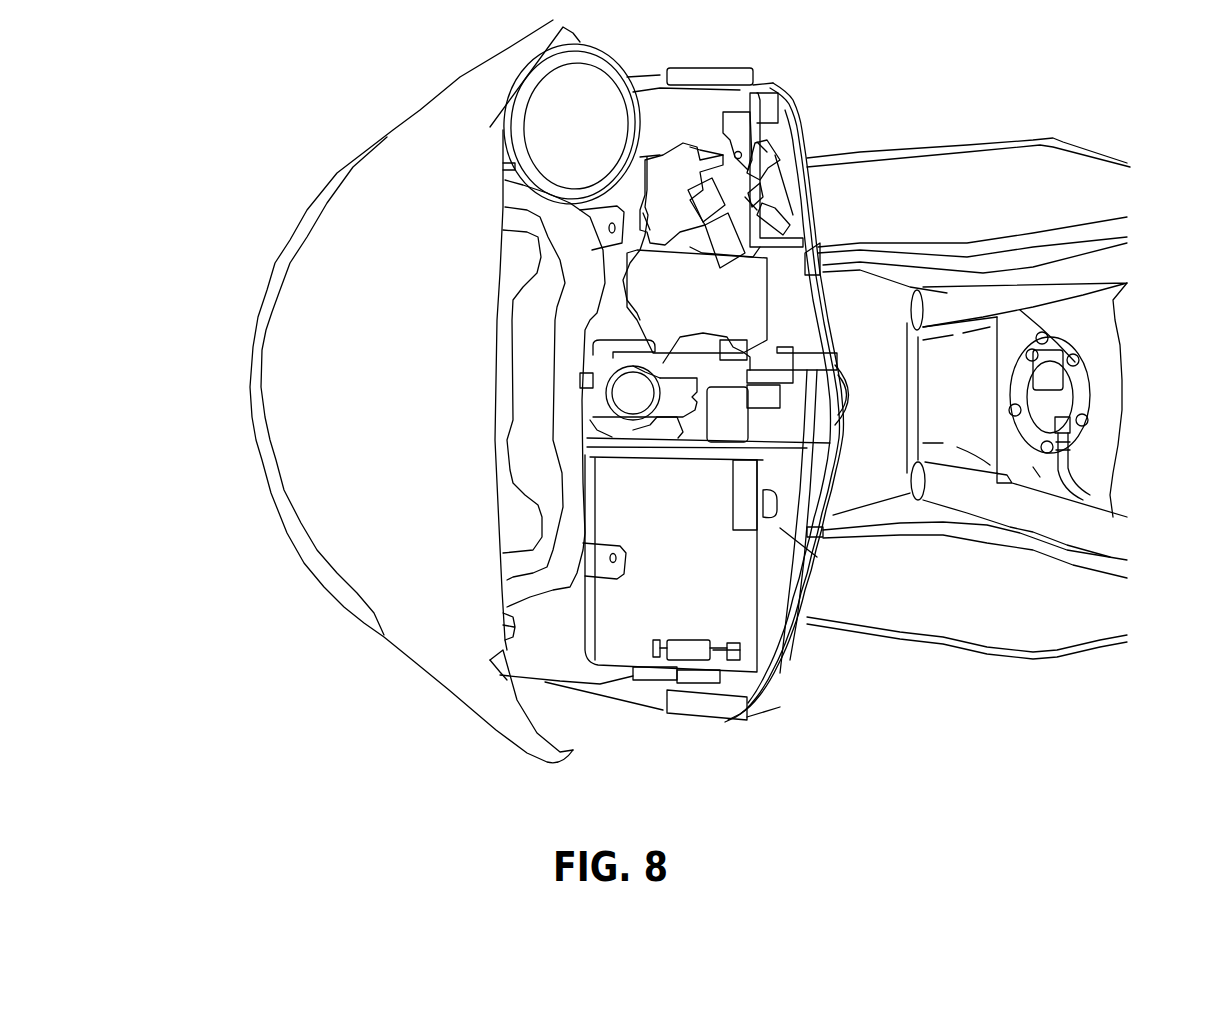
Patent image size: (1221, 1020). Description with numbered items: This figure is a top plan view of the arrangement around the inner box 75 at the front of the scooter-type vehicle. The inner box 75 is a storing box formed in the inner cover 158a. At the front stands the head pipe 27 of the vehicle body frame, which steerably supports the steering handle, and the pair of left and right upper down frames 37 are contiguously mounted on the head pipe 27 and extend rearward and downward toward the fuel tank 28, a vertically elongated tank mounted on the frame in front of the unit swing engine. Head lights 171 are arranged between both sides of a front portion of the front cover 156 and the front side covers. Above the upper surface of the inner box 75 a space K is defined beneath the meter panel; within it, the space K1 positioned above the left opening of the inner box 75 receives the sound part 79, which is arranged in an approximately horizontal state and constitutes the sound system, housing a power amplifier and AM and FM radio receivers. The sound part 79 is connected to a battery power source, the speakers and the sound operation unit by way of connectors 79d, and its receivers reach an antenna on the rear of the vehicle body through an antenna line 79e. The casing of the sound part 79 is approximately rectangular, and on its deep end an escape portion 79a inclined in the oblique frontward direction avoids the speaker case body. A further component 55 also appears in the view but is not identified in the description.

The head lights 171 is at (278, 265).
The front cover 156 is at (383, 547).
The headlight housing side wall 55 is at (533, 447).
The head pipe 27 is at (607, 372).
The space K is at (753, 280).
The inner box 75 is at (833, 307).
The upper down frames 37 is at (967, 297).
The fuel tank 28 is at (1033, 465).
The space K1 is at (820, 545).
The inner cover 158a is at (828, 468).
The sound part 79 is at (725, 610).
The escape portion 79a is at (587, 620).
The connectors 79d is at (653, 677).
The antenna line 79e is at (733, 660).